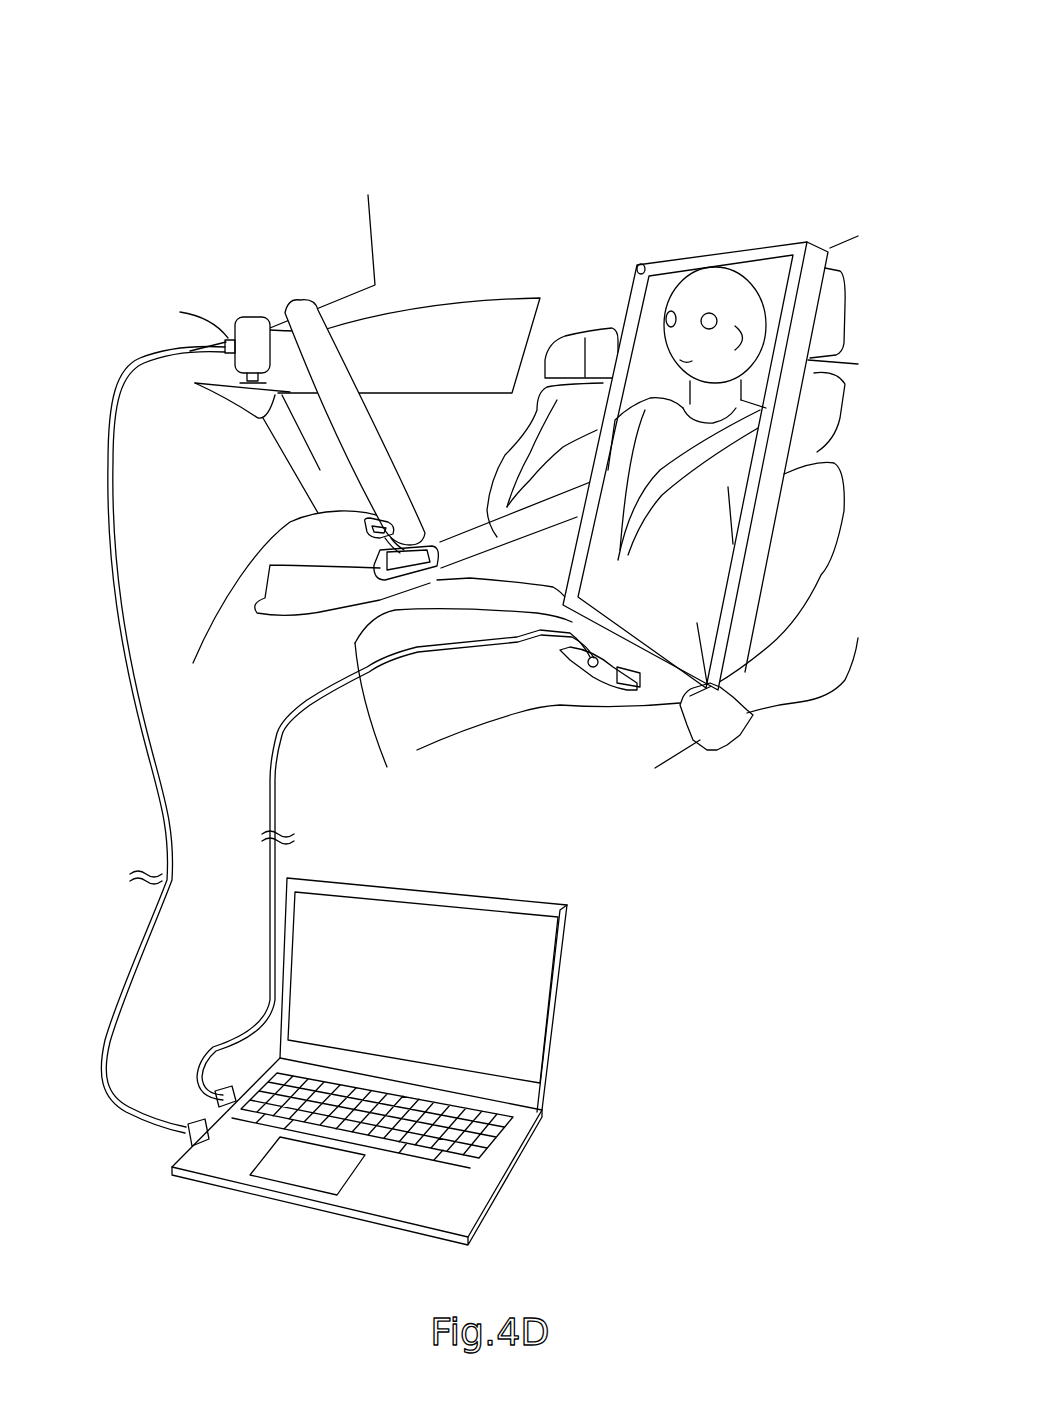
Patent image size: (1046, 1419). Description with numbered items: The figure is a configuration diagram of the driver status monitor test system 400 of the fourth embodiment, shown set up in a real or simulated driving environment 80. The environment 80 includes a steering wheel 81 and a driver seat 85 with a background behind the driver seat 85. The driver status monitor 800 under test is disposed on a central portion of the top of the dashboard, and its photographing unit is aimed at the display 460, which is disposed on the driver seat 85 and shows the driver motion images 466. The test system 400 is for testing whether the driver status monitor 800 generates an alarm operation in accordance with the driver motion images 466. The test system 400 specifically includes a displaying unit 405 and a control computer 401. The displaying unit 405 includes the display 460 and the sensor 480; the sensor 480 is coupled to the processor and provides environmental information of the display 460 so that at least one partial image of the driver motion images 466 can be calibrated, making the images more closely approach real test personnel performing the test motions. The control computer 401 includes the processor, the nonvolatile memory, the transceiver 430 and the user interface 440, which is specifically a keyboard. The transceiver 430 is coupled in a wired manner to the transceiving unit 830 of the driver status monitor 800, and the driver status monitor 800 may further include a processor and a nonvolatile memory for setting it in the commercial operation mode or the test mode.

The driving environment 80 is at (372, 172).
The steering wheel 81 is at (300, 318).
The driver status monitor 800 is at (251, 316).
The transceiving unit 830 is at (231, 345).
The driver seat 85 is at (550, 733).
The displaying unit 405 is at (668, 257).
The display 460 is at (777, 268).
The sensor 480 is at (634, 263).
The driver motion images 466 is at (748, 715).
The transceiver 430 is at (180, 1138).
The driver status monitor test system 400 is at (476, 1024).
The control computer 401 is at (517, 1010).
The user interface 440 is at (503, 1137).